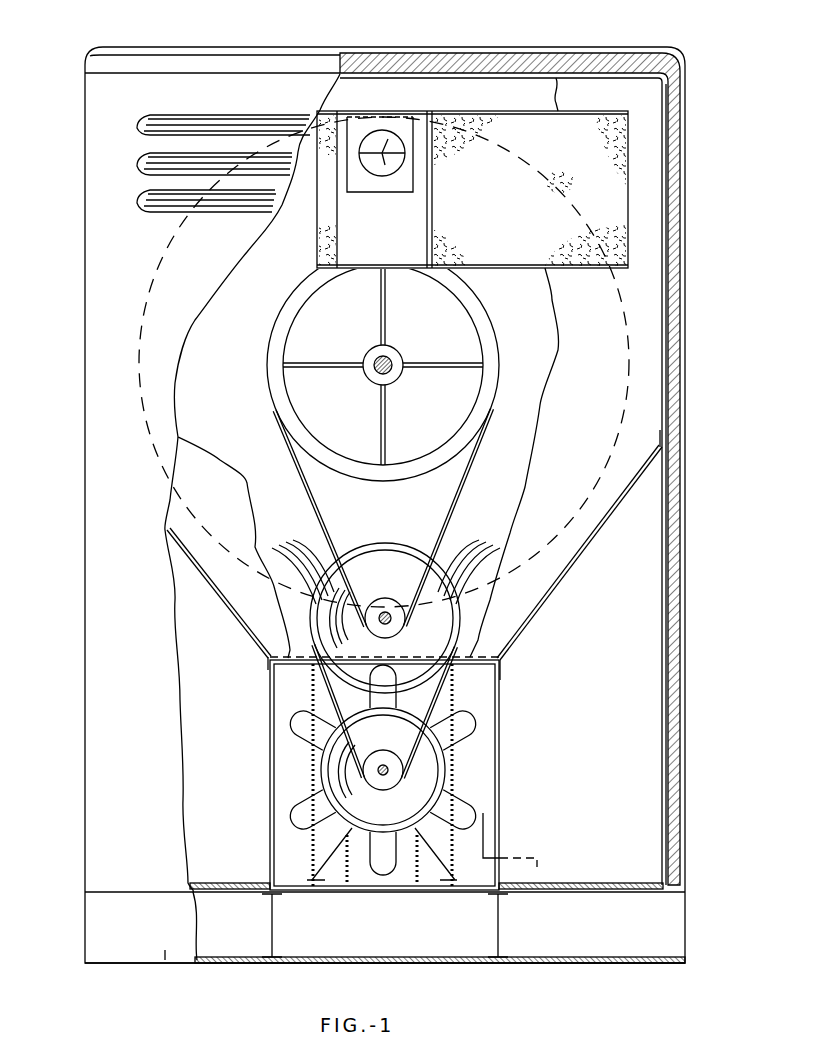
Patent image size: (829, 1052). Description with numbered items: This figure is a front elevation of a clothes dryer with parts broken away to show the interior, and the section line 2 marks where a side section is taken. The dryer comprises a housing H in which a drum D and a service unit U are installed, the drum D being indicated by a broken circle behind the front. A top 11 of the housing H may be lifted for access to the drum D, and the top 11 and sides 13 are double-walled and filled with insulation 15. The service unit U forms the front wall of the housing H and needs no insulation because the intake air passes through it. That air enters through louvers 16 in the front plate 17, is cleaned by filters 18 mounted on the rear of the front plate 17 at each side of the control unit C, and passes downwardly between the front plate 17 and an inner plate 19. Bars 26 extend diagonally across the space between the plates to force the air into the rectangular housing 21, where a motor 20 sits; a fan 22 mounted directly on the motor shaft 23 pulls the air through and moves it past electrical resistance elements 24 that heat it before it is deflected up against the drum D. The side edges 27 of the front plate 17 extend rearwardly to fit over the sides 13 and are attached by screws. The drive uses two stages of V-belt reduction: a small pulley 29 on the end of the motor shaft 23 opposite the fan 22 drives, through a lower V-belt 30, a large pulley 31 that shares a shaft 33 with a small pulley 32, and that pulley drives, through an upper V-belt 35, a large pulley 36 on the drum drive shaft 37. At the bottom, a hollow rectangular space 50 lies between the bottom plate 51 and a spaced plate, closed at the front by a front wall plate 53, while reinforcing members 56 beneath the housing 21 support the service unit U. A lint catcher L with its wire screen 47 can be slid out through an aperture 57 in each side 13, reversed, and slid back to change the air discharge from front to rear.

The top 11 is at (90, 58).
The sides 13 is at (682, 382).
The insulation 15 is at (630, 52).
The louvers 16 is at (158, 214).
The front plate 17 is at (180, 722).
The filters 18 is at (483, 117).
The inner plate 19 is at (521, 520).
The motor 20 is at (434, 781).
The rectangular housing 21 is at (269, 784).
The fan 22 is at (478, 717).
The motor shaft 23 is at (383, 785).
The electrical resistance elements 24 is at (454, 693).
The bars 26 is at (226, 607).
The side edges 27 is at (662, 640).
The small pulley 29 is at (386, 760).
The lower V-belt 30 is at (356, 744).
The large pulley 31 is at (388, 546).
The small pulley 32 is at (386, 598).
The shaft 33 is at (393, 633).
The upper V-belt 35 is at (461, 492).
The large pulley 36 is at (400, 484).
The drum drive shaft 37 is at (390, 355).
The wire screen 47 is at (221, 883).
The hollow rectangular space 50 is at (252, 923).
The bottom plate 51 is at (230, 963).
The front wall plate 53 is at (165, 962).
The reinforcing members 56 is at (274, 931).
The aperture 57 is at (685, 887).
The control unit C is at (380, 192).
The drum D is at (534, 317).
The housing H is at (692, 156).
The service unit U is at (505, 752).
The lint catcher L is at (598, 880).
The section line 2- 2 is at (490, 0).